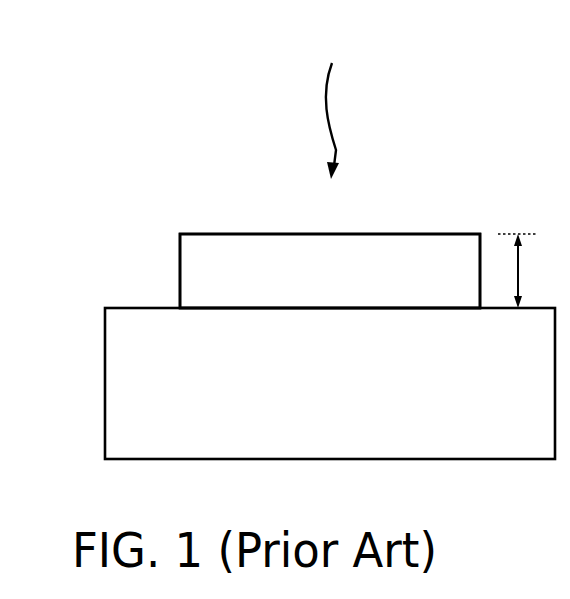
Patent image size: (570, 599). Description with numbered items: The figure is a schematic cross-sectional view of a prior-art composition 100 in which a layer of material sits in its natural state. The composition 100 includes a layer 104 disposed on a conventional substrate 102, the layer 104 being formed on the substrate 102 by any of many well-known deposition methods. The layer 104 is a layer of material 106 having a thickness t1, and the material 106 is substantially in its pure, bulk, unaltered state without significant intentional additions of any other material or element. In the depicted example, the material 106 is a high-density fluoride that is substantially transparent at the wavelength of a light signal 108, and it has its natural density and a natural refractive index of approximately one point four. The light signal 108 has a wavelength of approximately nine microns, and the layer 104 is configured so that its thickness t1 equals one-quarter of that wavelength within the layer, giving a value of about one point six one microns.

The composition 100 is at (314, 235).
The substrate 102 is at (538, 444).
The layer 104 is at (180, 268).
The material 106 is at (438, 288).
The light signal 108 is at (353, 121).
The thickness t1 is at (527, 271).